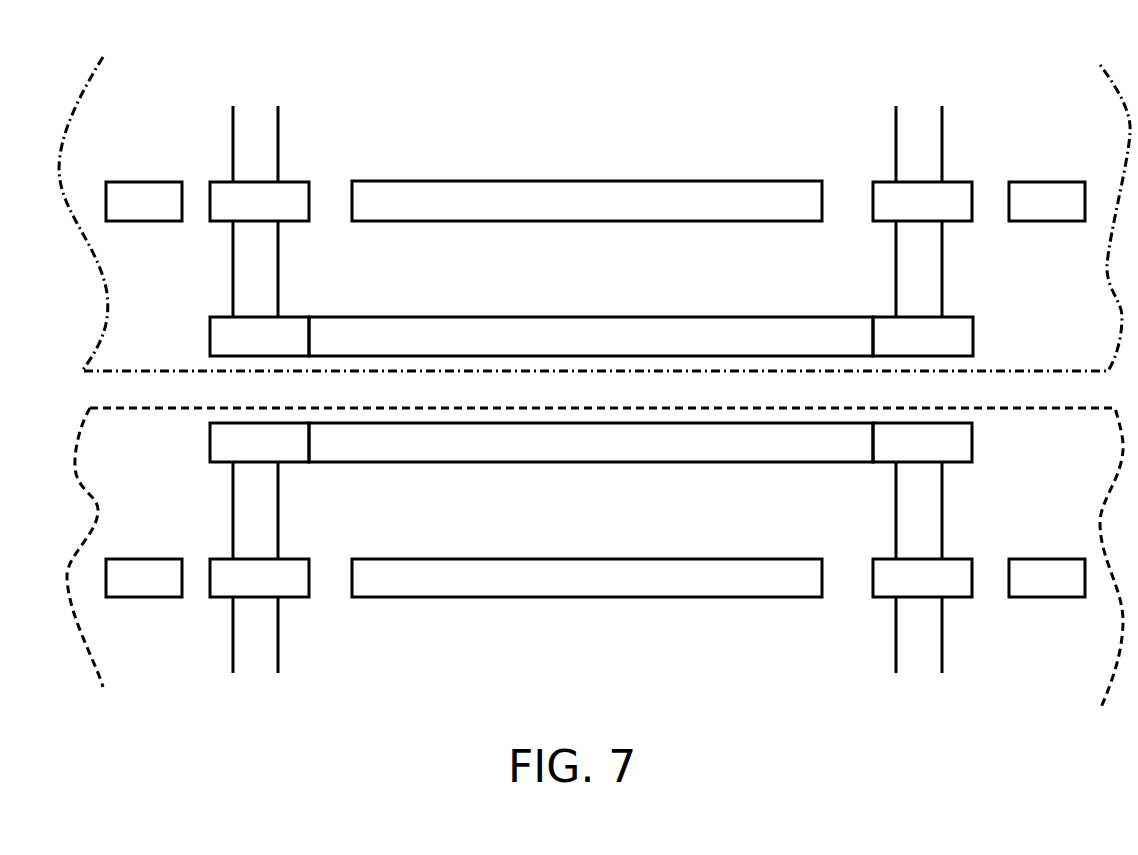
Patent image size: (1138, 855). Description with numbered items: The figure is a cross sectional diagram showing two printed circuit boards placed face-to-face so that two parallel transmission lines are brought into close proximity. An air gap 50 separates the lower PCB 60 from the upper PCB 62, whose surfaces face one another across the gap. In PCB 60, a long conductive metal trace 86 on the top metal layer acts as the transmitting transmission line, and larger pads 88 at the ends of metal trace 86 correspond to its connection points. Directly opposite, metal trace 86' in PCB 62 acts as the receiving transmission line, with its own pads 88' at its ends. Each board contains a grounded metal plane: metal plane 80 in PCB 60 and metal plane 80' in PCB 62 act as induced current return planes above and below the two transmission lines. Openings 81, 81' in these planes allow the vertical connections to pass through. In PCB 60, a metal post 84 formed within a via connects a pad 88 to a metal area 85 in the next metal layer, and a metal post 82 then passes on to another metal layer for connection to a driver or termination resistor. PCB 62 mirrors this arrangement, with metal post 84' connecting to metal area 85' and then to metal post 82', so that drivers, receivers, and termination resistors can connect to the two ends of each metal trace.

The air gap 50 is at (542, 401).
The PCB 60 is at (442, 686).
The PCB 62 is at (457, 127).
The metal plane 80 is at (595, 578).
The opening 81 is at (332, 579).
The metal post 82 is at (587, 635).
The metal post 84 is at (587, 510).
The metal area 85 is at (591, 578).
The metal trace 86 is at (591, 442).
The pad 88 is at (591, 442).
The metal plane 80' is at (595, 201).
The opening 81' is at (333, 200).
The metal post 82' is at (587, 144).
The metal post 84' is at (587, 269).
The metal area 85' is at (591, 201).
The metal trace 86' is at (591, 336).
The pad 88' is at (591, 336).